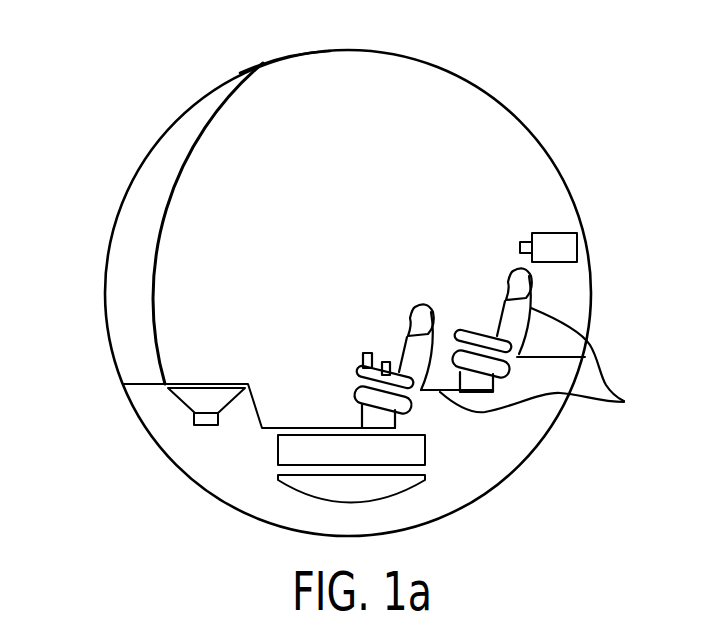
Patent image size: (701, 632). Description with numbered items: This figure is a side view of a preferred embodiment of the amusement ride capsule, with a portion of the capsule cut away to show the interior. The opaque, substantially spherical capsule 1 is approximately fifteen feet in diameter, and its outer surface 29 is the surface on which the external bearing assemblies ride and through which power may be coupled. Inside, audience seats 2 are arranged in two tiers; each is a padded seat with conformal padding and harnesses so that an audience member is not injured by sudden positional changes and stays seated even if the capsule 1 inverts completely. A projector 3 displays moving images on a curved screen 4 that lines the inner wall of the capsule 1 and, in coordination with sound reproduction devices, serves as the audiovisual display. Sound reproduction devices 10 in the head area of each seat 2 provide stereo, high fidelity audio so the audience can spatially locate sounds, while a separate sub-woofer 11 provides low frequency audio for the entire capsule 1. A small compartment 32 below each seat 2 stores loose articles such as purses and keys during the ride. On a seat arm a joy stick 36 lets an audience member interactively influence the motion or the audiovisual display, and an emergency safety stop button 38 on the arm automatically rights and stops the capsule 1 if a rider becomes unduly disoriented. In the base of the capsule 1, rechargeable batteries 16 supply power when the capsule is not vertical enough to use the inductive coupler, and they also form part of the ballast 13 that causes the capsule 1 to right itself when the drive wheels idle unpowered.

The spherical capsule 1 is at (466, 78).
The audience seats 2 is at (542, 362).
The projector 3 is at (543, 233).
The curved screen 4 is at (155, 290).
The sound reproduction devices 10 is at (343, 343).
The sub-woofer 11 is at (206, 425).
The ballast 13 is at (415, 487).
The rechargeable batteries 16 is at (425, 447).
The outer surface 29 is at (308, 50).
The small compartment 32 is at (357, 412).
The joy stick 36 is at (360, 362).
The emergency safety stop button 38 is at (386, 361).